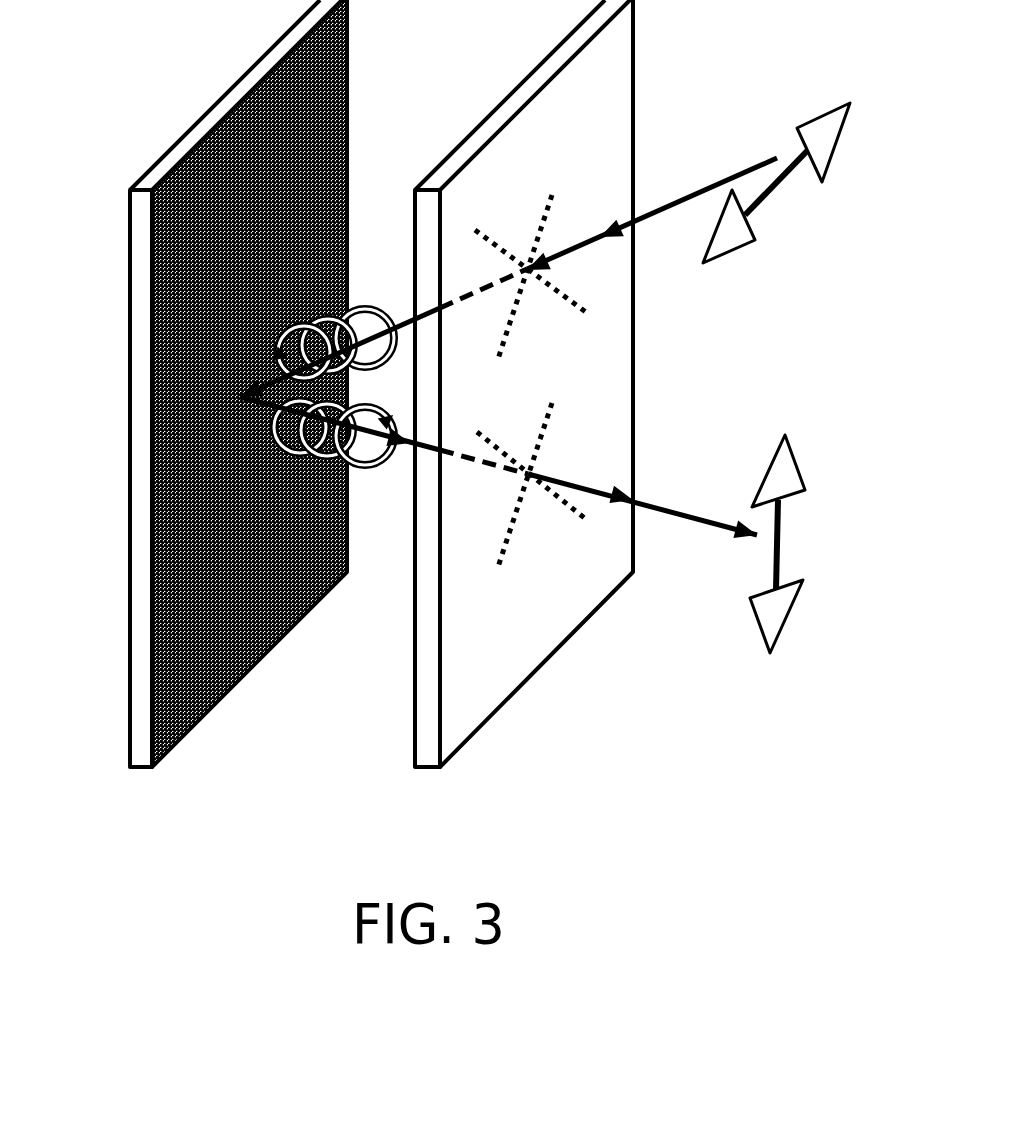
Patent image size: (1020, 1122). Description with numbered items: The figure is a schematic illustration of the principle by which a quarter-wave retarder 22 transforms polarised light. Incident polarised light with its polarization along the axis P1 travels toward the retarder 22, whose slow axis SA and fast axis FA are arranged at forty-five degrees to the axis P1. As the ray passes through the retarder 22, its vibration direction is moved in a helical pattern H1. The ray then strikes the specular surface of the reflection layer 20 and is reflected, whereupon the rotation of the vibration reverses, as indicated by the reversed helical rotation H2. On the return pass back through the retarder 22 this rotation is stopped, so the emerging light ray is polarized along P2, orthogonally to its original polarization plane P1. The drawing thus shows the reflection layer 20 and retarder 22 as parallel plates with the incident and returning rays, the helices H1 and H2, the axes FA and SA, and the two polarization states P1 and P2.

The reflection layer 20 is at (128, 645).
The quarter-wave retarder 22 is at (497, 693).
The helical pattern H1 is at (374, 294).
The reversed helical rotation H2 is at (388, 487).
The fast axis FA is at (497, 240).
The slow axis SA is at (560, 217).
The axis of polarization of incident light P1 is at (822, 113).
The orthogonal polarization P2 is at (787, 620).